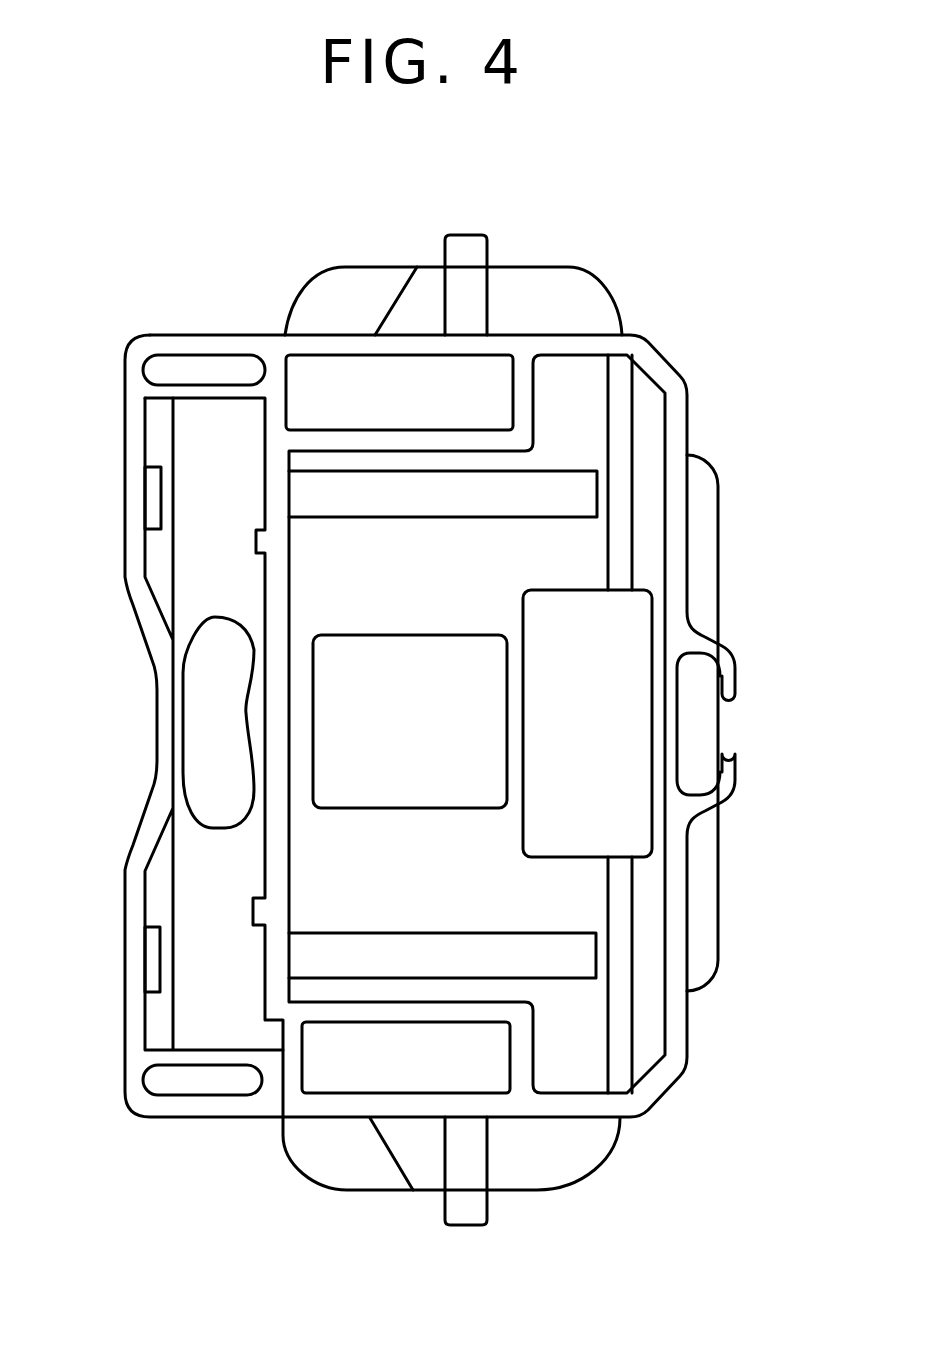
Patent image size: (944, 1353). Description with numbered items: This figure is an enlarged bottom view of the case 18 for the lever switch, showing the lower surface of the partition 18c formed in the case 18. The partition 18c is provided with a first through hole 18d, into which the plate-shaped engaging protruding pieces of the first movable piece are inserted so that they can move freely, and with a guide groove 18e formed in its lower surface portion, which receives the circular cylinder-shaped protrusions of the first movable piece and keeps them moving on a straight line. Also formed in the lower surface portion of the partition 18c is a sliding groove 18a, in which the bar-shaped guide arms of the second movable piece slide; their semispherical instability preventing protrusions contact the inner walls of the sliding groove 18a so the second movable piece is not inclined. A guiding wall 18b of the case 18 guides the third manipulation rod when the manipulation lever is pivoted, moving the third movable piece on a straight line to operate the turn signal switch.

The case 18 is at (668, 350).
The sliding groove 18a is at (552, 473).
The guiding wall 18b is at (262, 866).
The partition 18c is at (565, 553).
The first through hole 18d is at (654, 694).
The guide groove 18e is at (633, 408).